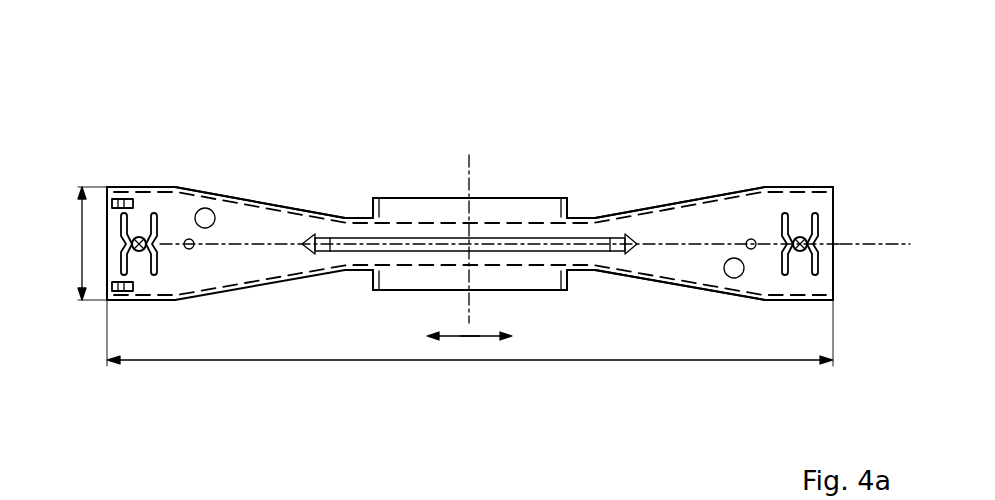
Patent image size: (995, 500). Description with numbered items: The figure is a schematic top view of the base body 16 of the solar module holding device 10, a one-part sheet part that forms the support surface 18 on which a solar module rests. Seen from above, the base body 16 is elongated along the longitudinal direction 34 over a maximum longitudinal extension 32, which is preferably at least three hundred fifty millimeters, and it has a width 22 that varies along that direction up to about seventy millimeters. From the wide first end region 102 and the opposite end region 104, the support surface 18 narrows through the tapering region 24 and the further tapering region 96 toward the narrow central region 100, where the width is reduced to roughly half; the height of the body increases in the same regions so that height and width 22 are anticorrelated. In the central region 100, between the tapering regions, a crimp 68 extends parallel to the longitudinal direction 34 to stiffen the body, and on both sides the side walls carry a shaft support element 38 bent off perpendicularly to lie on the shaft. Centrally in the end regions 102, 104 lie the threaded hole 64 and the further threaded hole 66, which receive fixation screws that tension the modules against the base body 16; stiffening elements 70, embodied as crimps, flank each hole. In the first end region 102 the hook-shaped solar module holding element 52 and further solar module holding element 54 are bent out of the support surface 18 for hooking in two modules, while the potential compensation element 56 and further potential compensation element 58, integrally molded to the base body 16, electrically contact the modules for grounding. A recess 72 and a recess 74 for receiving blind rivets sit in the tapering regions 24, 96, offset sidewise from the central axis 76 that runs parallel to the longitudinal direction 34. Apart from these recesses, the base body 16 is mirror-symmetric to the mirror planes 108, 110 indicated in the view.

The solar module holding device 10 is at (607, 150).
The base body 16 is at (742, 216).
The support surface 18 is at (703, 222).
The width 22 is at (78, 243).
The tapering region 24 is at (252, 180).
The longitudinal extension 32 is at (585, 362).
The longitudinal direction 34 is at (470, 340).
The shaft support element 38 is at (403, 205).
The solar module holding element 52 is at (122, 292).
The further solar module holding element 54 is at (126, 199).
The potential compensation element 56 is at (845, 272).
The further potential compensation element 58 is at (843, 205).
The threaded hole 64 is at (140, 236).
The further threaded hole 66 is at (801, 236).
The crimp 68 is at (511, 240).
The stiffening elements 70 is at (124, 270).
The recess for receiving a blind rivet 72 is at (205, 215).
The recess for receiving a blind rivet 74 is at (730, 276).
The central axis 76 is at (906, 246).
The further tapering region 96 is at (648, 174).
The central region 100 is at (455, 178).
The first end region 102 is at (124, 148).
The end region 104 is at (775, 150).
The mirror plane 108 is at (876, 337).
The mirror plane 110 is at (469, 305).